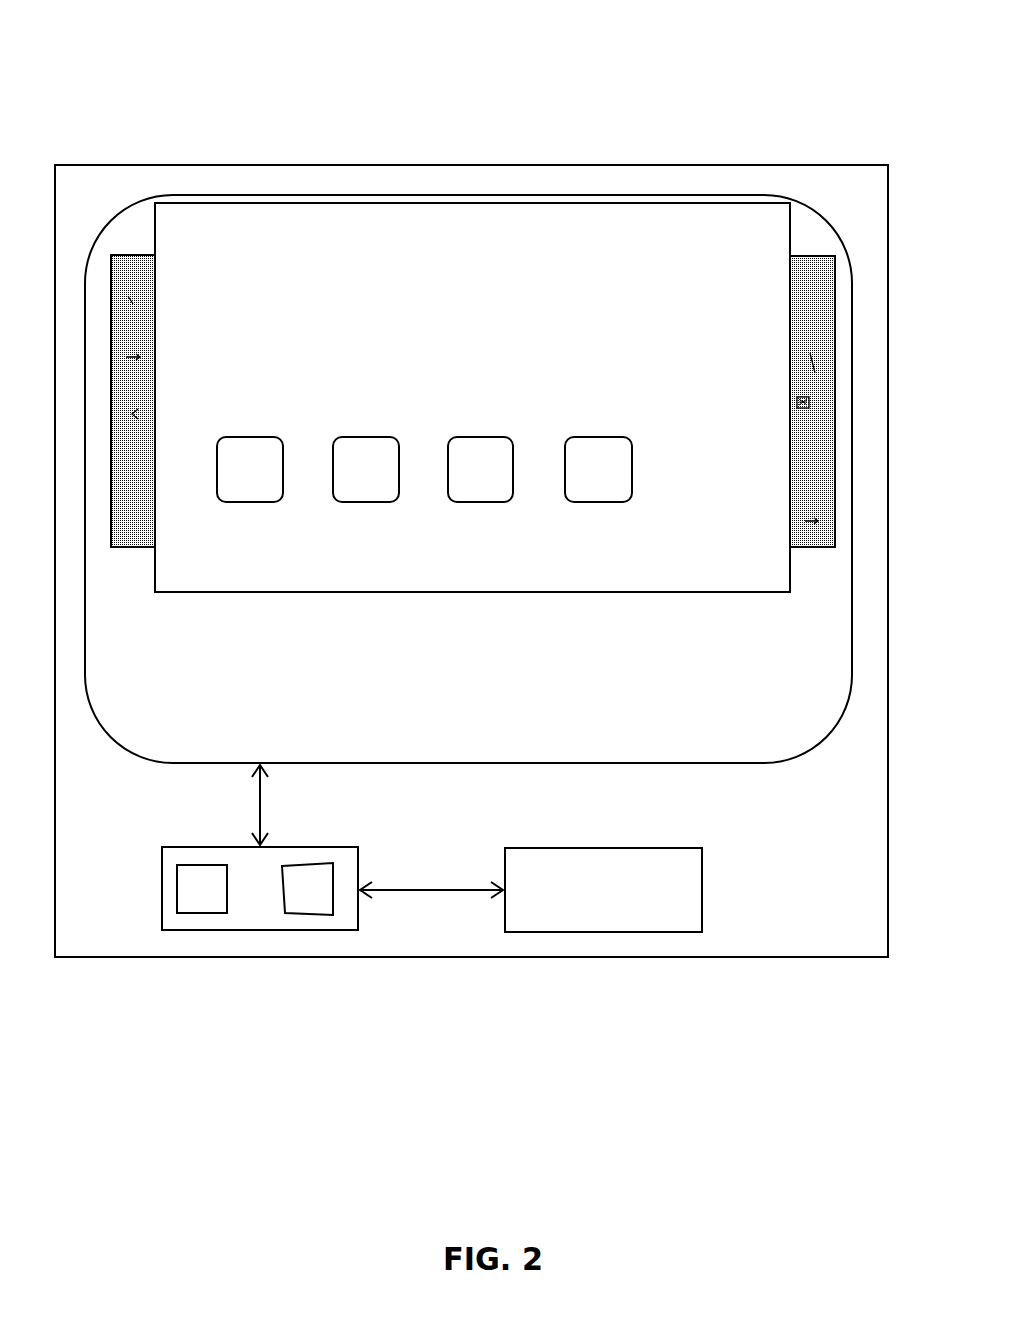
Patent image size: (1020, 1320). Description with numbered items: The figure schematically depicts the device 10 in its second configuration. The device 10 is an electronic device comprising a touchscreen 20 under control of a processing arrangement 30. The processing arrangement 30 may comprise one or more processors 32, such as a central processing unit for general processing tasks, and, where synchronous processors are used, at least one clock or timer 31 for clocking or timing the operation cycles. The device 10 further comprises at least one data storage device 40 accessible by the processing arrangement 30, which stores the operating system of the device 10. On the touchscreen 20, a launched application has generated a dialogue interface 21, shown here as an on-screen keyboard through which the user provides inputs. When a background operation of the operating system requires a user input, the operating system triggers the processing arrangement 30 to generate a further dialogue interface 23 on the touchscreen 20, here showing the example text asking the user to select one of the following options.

The device 10 is at (508, 1174).
The touchscreen 20 is at (546, 194).
The dialogue interface 21 is at (136, 256).
The further dialogue interface 23 is at (344, 220).
The processing arrangement 30 is at (270, 920).
The clock or timer 31 is at (200, 903).
The processor 32 is at (307, 903).
The data storage device 40 is at (610, 920).